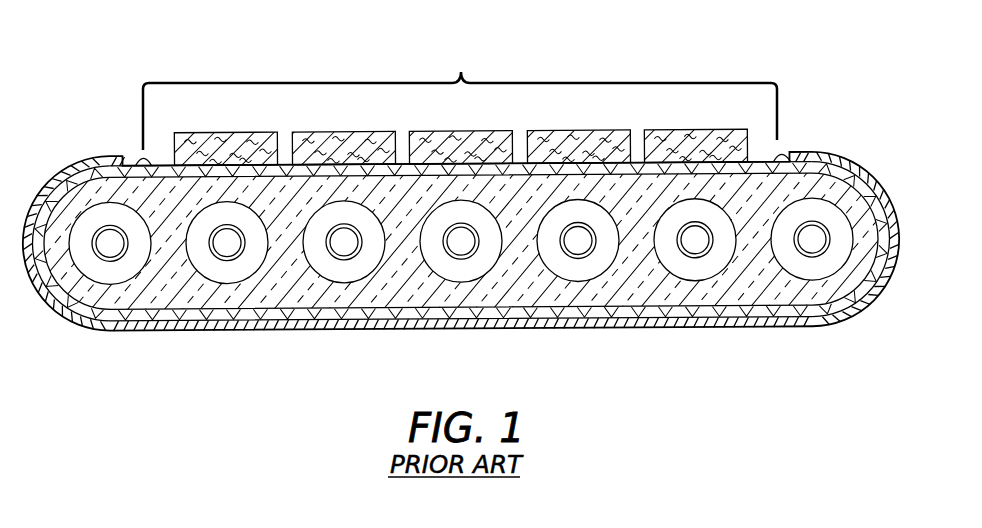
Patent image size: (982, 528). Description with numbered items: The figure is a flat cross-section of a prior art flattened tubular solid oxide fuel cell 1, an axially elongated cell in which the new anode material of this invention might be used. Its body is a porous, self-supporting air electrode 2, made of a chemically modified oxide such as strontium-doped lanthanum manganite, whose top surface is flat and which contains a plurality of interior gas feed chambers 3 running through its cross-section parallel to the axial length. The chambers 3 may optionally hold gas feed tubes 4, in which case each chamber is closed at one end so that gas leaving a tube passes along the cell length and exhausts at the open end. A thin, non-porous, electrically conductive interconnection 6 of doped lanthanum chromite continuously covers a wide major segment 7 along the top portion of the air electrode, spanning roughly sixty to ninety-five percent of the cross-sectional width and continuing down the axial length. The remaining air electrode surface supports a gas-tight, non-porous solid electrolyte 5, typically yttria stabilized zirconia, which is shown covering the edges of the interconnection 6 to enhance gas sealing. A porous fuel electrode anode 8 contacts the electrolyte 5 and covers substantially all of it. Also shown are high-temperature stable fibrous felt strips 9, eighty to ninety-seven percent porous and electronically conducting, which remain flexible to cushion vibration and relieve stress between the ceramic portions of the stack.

The flattened tubular solid oxide fuel cell 1 is at (85, 135).
The air electrode 2 is at (287, 290).
The interior gas feed chambers 3 is at (125, 272).
The gas feed tubes 4 is at (100, 258).
The solid electrolyte 5 is at (790, 155).
The interconnection 6 is at (757, 163).
The major segment 7 is at (460, 94).
The fuel electrode anode 8 is at (860, 155).
The fibrous felt strips 9 is at (318, 130).